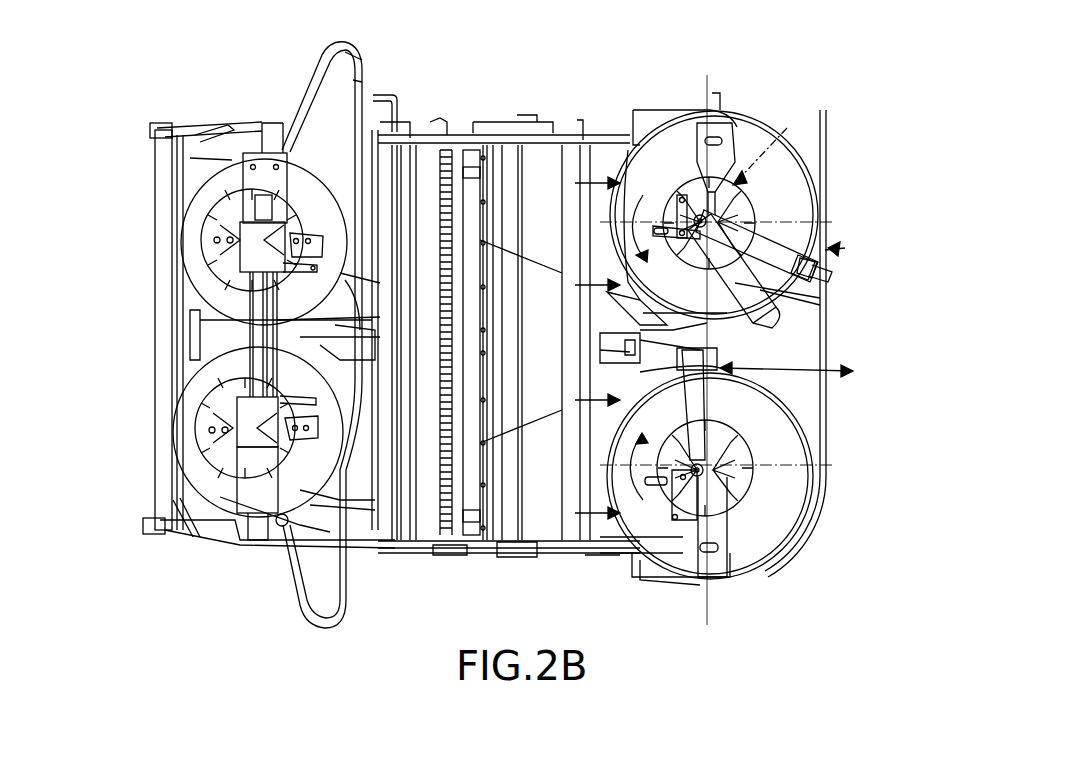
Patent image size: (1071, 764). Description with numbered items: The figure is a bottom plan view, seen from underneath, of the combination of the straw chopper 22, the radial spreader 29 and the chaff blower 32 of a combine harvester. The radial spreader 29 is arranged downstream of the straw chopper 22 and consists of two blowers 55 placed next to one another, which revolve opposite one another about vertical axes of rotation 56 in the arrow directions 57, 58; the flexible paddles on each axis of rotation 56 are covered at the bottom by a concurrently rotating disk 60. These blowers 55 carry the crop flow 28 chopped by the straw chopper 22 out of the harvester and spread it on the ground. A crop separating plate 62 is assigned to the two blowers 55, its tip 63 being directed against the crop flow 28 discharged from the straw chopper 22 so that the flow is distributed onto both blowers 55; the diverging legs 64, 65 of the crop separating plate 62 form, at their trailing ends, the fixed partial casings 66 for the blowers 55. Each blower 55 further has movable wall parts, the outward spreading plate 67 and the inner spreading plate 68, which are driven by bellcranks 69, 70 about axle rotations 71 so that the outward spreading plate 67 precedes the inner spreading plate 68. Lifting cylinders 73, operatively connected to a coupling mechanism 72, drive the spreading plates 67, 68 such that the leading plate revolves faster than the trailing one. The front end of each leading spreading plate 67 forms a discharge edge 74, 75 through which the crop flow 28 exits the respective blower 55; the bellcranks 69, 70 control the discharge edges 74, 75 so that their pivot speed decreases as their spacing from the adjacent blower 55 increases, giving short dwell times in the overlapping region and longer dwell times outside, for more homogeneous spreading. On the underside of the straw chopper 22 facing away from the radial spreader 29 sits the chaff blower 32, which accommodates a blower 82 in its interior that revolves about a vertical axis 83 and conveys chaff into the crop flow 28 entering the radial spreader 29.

The straw chopper 22 is at (481, 100).
The crop flow 28 is at (600, 150).
The radial spreader 29 is at (720, 78).
The chaff blower 32 is at (182, 560).
The blower 55 is at (772, 168).
The axis of rotation 56 is at (745, 200).
The arrow direction 57 is at (645, 200).
The arrow direction 58 is at (620, 540).
The concurrently rotating disk 60 is at (777, 326).
The crop separating plate 62 is at (600, 345).
The tip 63 is at (613, 350).
The diverging leg 64 is at (735, 325).
The diverging leg 65 is at (703, 403).
The fixed partial casing 66 is at (700, 370).
The outward spreading plate 67 is at (820, 262).
The inner spreading plate 68 is at (820, 310).
The bellcrank 69 is at (790, 240).
The bellcrank 70 is at (820, 290).
The axle rotation 71 is at (683, 262).
The coupling mechanism 72 is at (760, 127).
The lifting cylinder 73 is at (740, 150).
The discharge edge 74 is at (845, 248).
The discharge edge 75 is at (705, 380).
The blower 82 is at (316, 150).
The vertical axis 83 is at (262, 250).